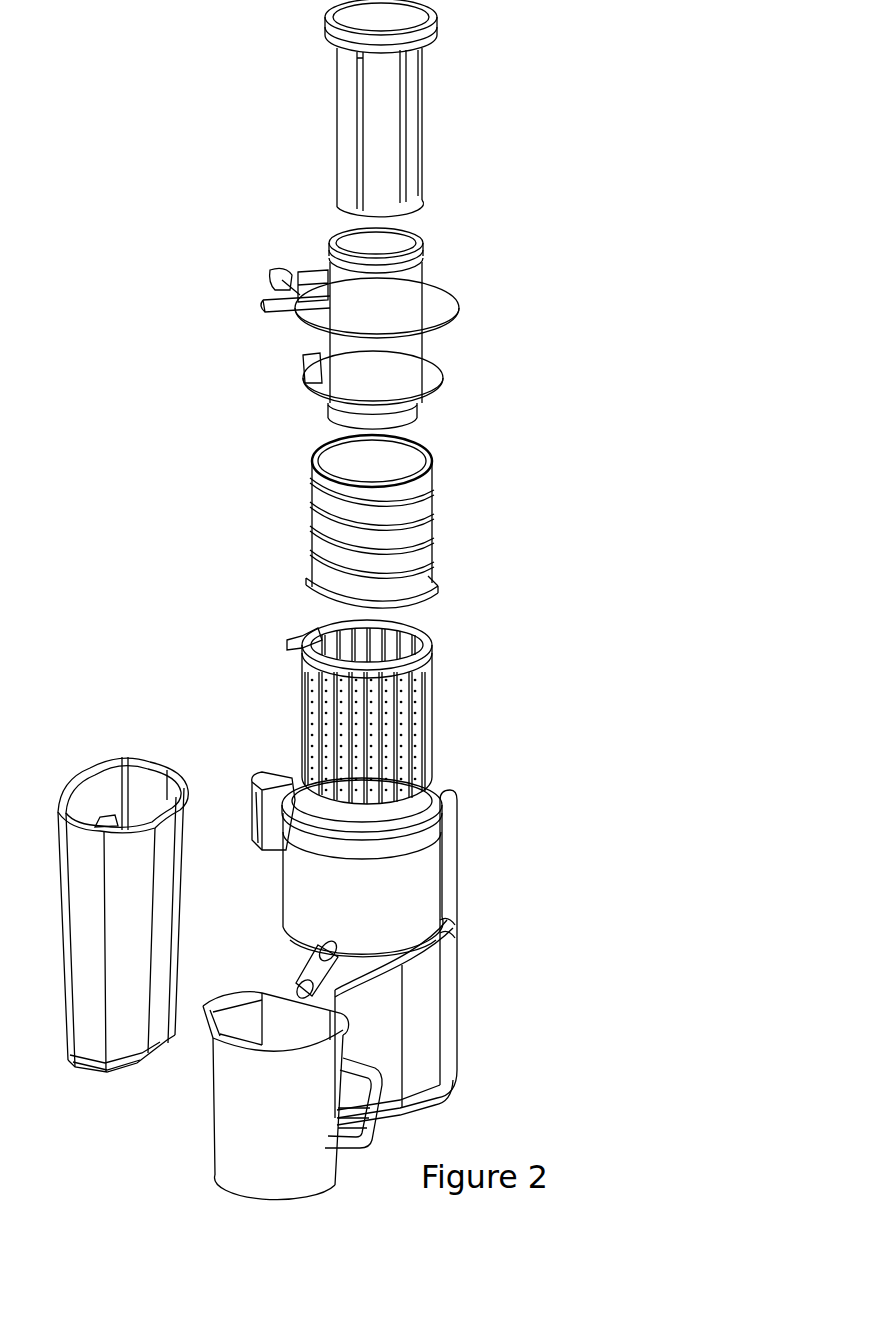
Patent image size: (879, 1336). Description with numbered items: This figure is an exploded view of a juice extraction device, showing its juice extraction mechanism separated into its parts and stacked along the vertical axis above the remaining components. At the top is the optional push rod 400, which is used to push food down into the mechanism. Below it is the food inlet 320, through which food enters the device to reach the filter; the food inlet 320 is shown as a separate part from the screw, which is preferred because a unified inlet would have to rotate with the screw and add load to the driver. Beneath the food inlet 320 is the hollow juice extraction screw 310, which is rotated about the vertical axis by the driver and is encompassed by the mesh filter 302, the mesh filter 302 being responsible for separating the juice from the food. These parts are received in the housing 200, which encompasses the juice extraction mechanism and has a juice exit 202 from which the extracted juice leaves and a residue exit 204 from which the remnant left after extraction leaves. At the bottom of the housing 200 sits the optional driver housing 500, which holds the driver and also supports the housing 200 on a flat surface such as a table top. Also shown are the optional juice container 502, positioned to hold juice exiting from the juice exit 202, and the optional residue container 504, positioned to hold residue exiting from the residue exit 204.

The push rod 400 is at (383, 122).
The food inlet 320 is at (391, 368).
The hollow juice extraction screw 310 is at (393, 527).
The mesh filter 302 is at (405, 726).
The housing 200 is at (419, 892).
The residue exit 204 is at (270, 775).
The juice exit 202 is at (296, 972).
The driver housing 500 is at (418, 1024).
The juice container 502 is at (275, 1122).
The residue container 504 is at (144, 783).